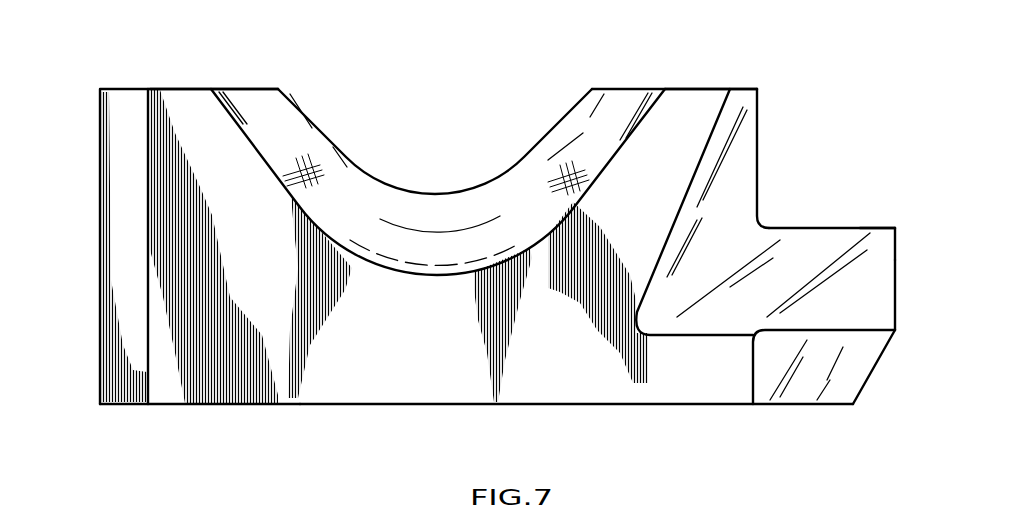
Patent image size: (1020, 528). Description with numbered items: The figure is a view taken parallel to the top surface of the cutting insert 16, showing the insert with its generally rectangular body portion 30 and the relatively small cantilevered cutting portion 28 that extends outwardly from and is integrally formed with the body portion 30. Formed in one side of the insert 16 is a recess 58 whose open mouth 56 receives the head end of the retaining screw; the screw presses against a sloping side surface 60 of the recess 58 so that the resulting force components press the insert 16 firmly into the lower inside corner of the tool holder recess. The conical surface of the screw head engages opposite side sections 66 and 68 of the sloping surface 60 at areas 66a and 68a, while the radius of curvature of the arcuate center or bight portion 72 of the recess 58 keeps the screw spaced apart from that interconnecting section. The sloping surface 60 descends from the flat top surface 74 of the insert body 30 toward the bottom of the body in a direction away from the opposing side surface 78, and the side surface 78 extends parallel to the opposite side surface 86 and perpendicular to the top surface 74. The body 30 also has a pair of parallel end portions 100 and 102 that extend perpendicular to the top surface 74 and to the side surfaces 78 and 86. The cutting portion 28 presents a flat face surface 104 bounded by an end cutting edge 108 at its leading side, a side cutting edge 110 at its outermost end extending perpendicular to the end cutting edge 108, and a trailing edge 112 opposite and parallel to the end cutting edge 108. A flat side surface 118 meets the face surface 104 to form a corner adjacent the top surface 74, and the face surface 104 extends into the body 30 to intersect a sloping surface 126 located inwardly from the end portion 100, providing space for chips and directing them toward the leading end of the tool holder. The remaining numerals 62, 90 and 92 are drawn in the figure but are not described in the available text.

The insert 16 is at (70, 80).
The cutting portion 28 is at (826, 222).
The body portion 30 is at (695, 86).
The open mouth 56 is at (468, 129).
The recess 58 is at (414, 180).
The sloping side surface 60 is at (421, 255).
The liner edge 62 is at (215, 87).
The side section 66 is at (330, 212).
The side area 66a is at (294, 174).
The side section 68 is at (595, 157).
The side area 68a is at (568, 177).
The bight portion 72 is at (476, 249).
The top surface 74 is at (567, 391).
The side surface 78 is at (303, 404).
The side surface 86 is at (185, 86).
The top surface 90 is at (700, 92).
The side wall 92 is at (160, 88).
The end portion 100 is at (758, 142).
The end portion 102 is at (100, 257).
The face surface 104 is at (880, 293).
The end cutting edge 108 is at (860, 333).
The side cutting edge 110 is at (897, 253).
The trailing edge 112 is at (866, 228).
The side surface 118 is at (820, 380).
The sloping surface 126 is at (895, 333).